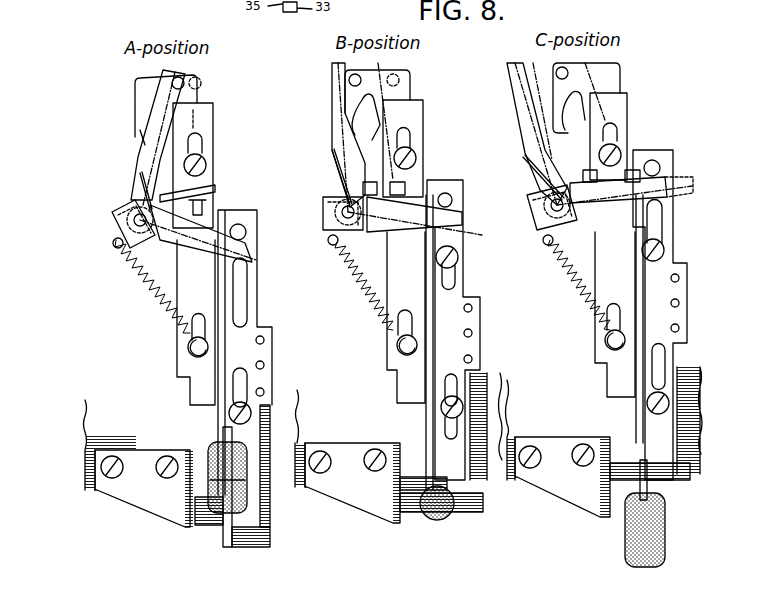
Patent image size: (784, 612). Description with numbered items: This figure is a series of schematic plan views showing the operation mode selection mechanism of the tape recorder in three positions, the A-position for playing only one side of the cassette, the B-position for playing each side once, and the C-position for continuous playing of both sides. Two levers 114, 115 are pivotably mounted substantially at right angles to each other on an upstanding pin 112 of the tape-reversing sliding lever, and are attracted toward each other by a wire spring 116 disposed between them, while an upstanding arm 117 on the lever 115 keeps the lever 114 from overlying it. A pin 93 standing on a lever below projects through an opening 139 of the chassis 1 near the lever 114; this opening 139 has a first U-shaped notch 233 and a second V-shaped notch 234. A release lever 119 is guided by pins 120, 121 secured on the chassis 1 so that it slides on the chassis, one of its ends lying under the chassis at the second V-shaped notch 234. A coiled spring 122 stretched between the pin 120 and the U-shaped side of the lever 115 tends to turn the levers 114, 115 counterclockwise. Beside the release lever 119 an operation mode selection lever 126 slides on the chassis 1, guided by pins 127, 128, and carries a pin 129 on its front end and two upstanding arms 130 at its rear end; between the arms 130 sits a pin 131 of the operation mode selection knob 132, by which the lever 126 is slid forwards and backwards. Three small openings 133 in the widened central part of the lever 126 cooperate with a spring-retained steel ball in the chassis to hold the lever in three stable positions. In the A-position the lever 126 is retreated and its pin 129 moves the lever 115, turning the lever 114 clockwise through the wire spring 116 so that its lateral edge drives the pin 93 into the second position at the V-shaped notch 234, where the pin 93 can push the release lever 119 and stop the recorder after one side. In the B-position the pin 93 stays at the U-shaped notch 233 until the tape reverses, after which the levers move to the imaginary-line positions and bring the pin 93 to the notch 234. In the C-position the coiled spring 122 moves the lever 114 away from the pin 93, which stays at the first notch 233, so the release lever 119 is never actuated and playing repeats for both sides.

The chassis 1 is at (85, 430).
The pin 93 is at (186, 84).
The pin 112 is at (126, 207).
The lever 114 is at (147, 126).
The lever 115 is at (250, 253).
The wire spring 116 is at (139, 174).
The upstanding arm 117 is at (202, 191).
The release lever 119 is at (194, 387).
The pin 120 is at (188, 355).
The pin 121 is at (203, 172).
The coiled spring 122 is at (142, 282).
The operation mode selection lever 126 is at (255, 314).
The pin 127 is at (230, 417).
The pin 128 is at (251, 284).
The pin 129 is at (244, 236).
The upstanding arms 130 is at (265, 516).
The pin 131 is at (272, 537).
The operation mode selection knob 132 is at (215, 527).
The small openings 133 is at (265, 390).
The opening 139 is at (140, 83).
The first U-shaped notch 233 is at (141, 140).
The second V-shaped notch 234 is at (200, 120).